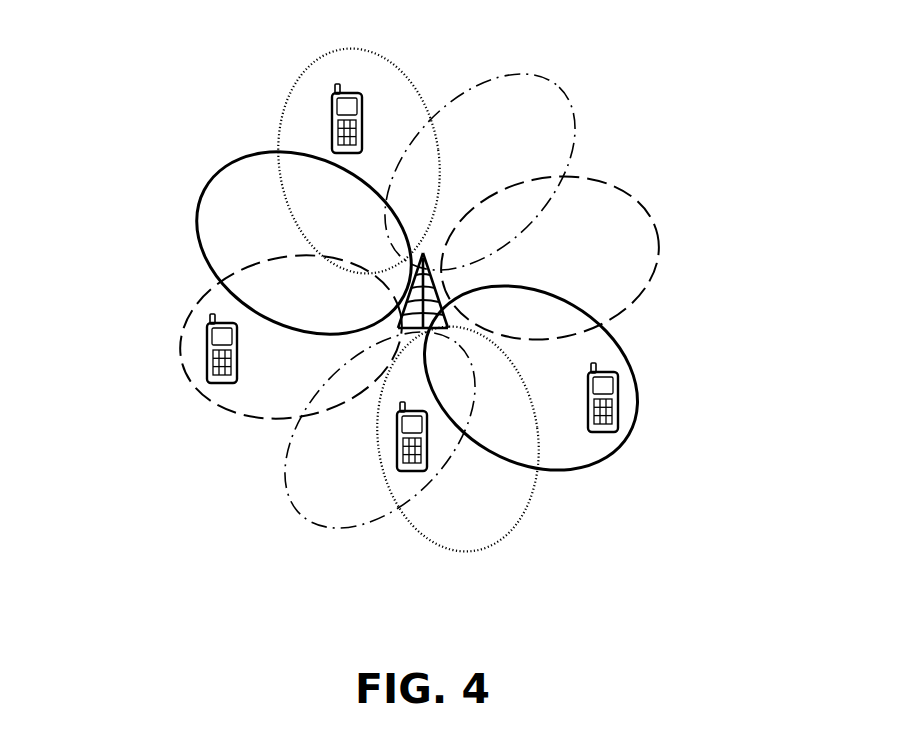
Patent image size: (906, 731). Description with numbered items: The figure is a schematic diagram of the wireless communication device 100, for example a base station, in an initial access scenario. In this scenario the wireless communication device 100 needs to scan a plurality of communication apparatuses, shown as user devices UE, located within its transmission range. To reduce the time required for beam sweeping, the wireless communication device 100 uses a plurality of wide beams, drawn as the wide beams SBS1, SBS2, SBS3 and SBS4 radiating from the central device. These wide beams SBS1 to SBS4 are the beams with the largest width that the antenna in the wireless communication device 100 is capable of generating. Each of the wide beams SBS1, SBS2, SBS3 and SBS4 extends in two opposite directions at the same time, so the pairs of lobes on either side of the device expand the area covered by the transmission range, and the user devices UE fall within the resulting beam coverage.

The wireless communication device 100 is at (432, 281).
The wide beam SBS1 is at (210, 183).
The wide beam SBS2 is at (645, 203).
The wide beam SBS3 is at (538, 82).
The wide beam SBS4 is at (306, 63).
The user device UE is at (352, 93).